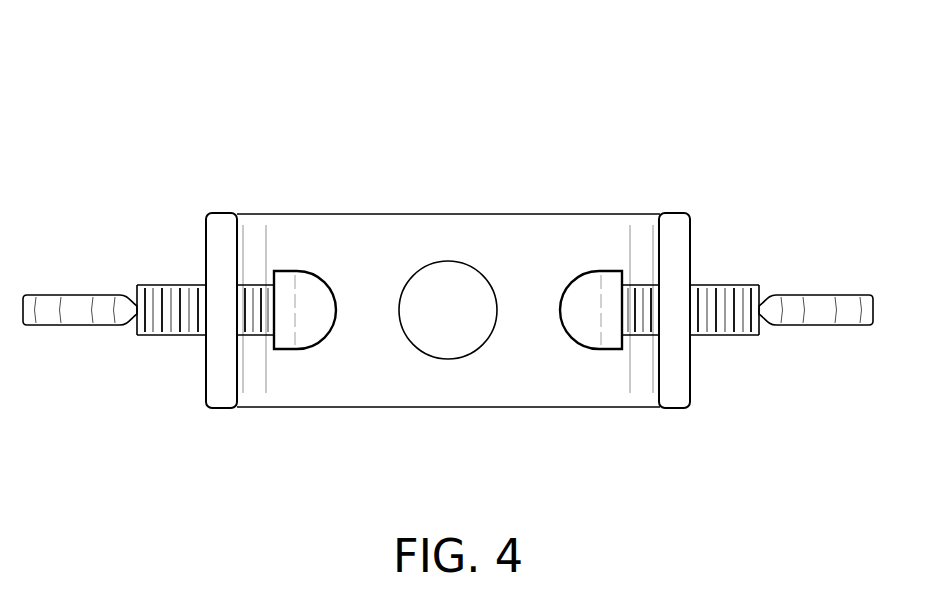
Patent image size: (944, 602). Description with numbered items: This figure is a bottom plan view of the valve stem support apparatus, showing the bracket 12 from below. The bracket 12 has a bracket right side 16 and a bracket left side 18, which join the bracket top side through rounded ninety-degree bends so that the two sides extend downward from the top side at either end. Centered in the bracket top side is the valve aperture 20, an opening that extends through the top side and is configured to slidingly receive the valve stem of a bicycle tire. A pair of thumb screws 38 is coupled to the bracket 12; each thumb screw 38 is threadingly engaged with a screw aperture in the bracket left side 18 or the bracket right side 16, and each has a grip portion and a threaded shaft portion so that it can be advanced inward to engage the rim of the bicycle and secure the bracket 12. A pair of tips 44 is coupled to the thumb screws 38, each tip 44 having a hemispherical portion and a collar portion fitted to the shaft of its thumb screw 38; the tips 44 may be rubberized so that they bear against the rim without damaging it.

The bracket 12 is at (355, 220).
The bracket right side 16 is at (672, 225).
The bracket left side 18 is at (223, 218).
The valve aperture 20 is at (435, 262).
The thumb screws 38 is at (160, 318).
The tips 44 is at (595, 295).